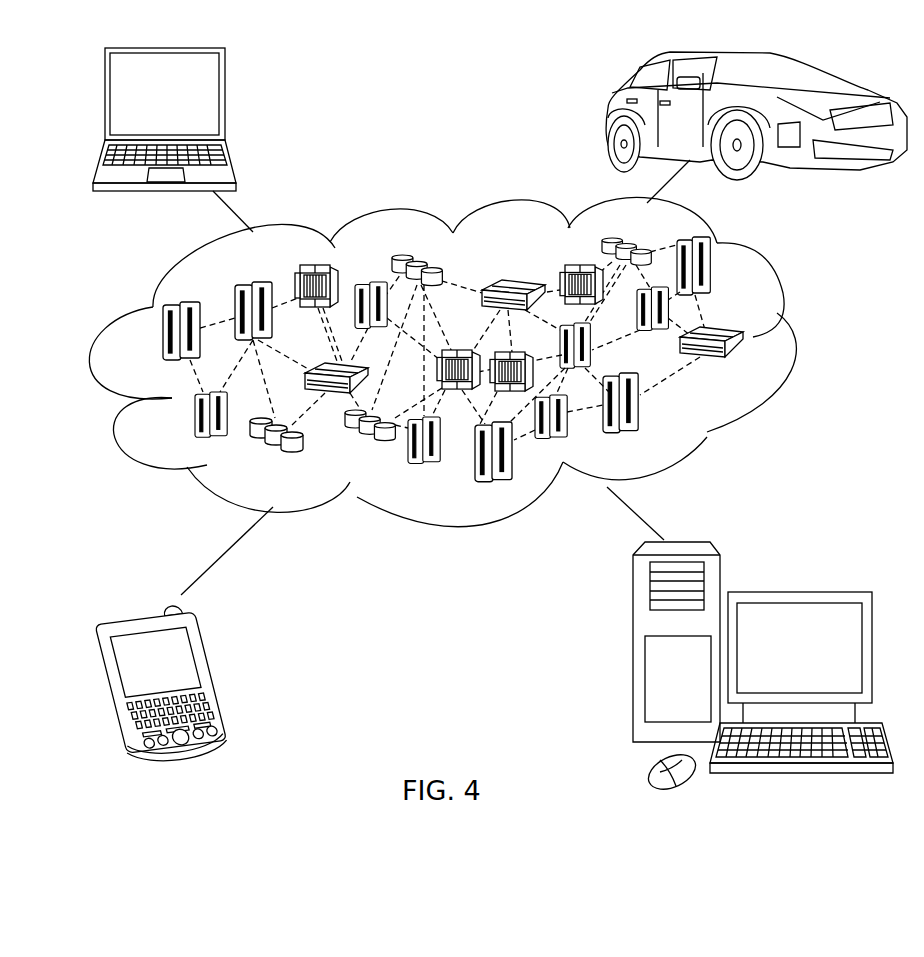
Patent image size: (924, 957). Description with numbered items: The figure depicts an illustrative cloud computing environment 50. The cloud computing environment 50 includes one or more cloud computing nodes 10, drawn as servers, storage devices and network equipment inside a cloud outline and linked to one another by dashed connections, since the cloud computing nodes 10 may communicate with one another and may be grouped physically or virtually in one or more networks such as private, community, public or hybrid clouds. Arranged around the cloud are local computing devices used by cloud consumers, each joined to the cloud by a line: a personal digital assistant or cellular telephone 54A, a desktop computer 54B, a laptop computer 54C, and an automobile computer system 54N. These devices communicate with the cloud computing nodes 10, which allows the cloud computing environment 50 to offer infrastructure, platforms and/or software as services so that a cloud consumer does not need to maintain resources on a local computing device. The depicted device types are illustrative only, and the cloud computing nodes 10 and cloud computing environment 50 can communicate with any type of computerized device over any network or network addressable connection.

The cloud computing nodes 10 is at (754, 369).
The cloud computing environment 50 is at (798, 340).
The personal digital assistant or cellular telephone 54A is at (219, 676).
The desktop computer 54B is at (799, 592).
The laptop computer 54C is at (225, 101).
The automobile computer system 54N is at (606, 113).